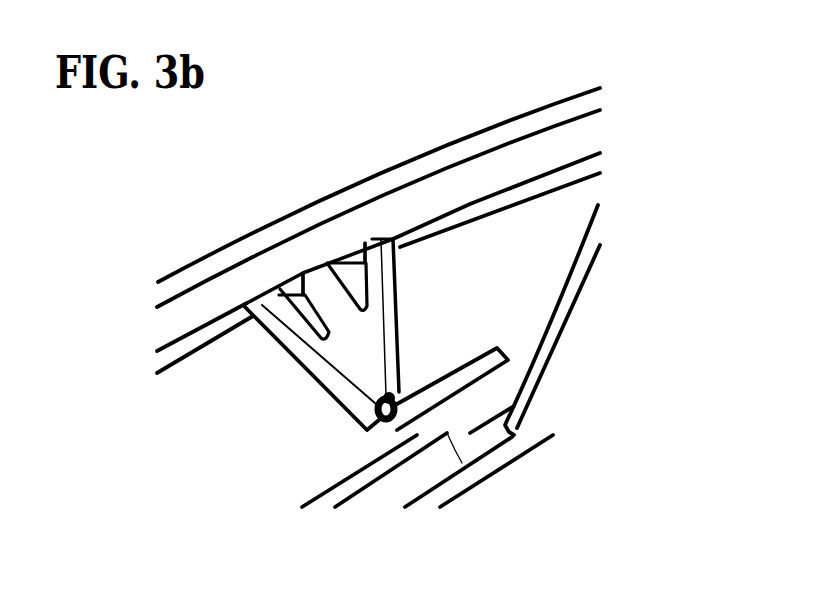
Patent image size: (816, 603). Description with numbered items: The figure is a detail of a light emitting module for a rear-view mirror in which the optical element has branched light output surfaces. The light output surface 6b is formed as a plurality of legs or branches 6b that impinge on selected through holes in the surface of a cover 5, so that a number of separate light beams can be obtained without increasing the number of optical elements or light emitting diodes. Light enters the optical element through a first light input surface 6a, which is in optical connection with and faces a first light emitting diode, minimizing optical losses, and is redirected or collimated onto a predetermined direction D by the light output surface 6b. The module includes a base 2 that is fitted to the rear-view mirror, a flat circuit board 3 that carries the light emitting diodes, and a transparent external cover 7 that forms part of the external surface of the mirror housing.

The external cover 7 is at (528, 128).
The cover 5 is at (570, 175).
The light output surface 6b is at (372, 241).
The first light input surface 6a is at (412, 394).
The flat circuit board 3 is at (320, 500).
The base 2 is at (523, 450).
The predetermined direction D is at (243, 302).